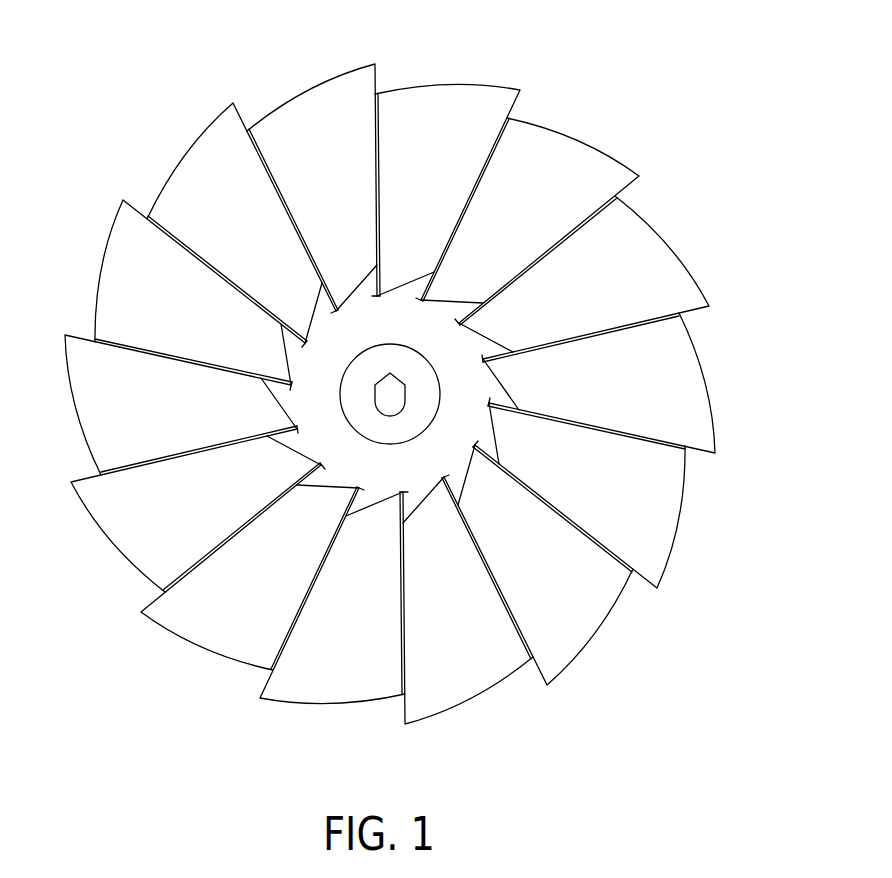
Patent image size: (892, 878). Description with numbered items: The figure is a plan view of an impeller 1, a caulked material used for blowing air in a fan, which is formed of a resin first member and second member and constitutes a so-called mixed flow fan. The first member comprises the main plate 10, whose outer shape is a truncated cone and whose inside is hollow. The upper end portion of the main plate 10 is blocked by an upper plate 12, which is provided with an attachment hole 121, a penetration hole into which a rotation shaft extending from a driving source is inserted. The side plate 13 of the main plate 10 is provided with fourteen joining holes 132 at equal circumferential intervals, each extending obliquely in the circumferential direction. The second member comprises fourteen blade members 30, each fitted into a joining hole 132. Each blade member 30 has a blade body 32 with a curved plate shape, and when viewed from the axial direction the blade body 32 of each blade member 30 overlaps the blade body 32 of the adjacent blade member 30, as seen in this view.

The impeller 1 is at (660, 97).
The main plate 10 is at (514, 330).
The upper plate 12 is at (430, 398).
The attachment hole 121 is at (391, 384).
The side plate 13 is at (458, 478).
The joining hole 132 is at (460, 483).
The blade member 30 is at (287, 90).
The blade body 32 is at (195, 208).